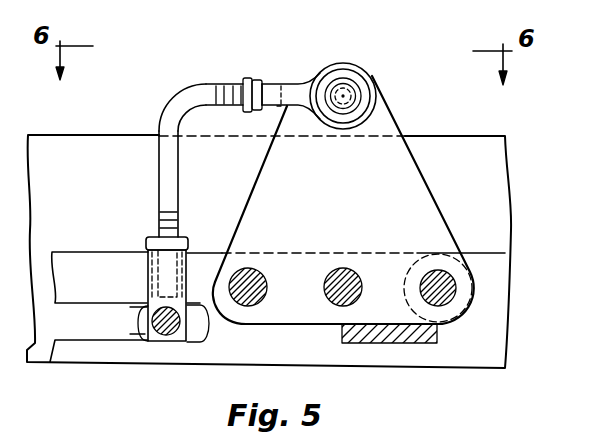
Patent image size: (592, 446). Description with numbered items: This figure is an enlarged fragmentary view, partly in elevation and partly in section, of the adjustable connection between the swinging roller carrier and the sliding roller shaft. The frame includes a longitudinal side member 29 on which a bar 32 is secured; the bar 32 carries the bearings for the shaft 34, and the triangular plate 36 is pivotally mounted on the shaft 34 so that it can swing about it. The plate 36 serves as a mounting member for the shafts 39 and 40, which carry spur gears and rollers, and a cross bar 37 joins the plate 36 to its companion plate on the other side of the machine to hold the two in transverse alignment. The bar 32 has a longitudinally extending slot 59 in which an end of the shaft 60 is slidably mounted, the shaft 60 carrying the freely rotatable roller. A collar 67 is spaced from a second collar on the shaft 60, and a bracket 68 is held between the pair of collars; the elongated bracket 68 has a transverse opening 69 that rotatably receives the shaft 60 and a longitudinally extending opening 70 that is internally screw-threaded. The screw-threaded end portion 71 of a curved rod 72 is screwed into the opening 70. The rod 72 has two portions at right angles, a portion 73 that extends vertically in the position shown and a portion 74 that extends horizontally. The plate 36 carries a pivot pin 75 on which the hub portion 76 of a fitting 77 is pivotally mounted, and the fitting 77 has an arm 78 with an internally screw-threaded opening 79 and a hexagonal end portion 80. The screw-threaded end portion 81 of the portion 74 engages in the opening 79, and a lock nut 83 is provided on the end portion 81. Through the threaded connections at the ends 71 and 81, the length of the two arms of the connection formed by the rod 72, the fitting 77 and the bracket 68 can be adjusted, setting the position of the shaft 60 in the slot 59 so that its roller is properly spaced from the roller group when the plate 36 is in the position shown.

The side member 29 is at (508, 152).
The bar 32 is at (508, 321).
The shaft 34 is at (455, 292).
The triangular plate 36 is at (398, 128).
The cross bar 37 is at (400, 346).
The shaft 39 is at (333, 304).
The shaft 40 is at (262, 305).
The slot 59 is at (88, 330).
The shaft 60 is at (177, 335).
The collar 67 is at (143, 327).
The bracket 68 is at (148, 288).
The transverse opening 69 is at (166, 340).
The longitudinally extending opening 70 is at (148, 265).
The screw-threaded end portion 71 is at (177, 222).
The curved rod 72 is at (158, 125).
The portion 73 is at (160, 164).
The portion 74 is at (207, 92).
The pivot pin 75 is at (343, 114).
The hub portion 76 is at (367, 82).
The fitting 77 is at (311, 78).
The arm 78 is at (300, 84).
The internally screw-threaded opening 79 is at (278, 108).
The hexagonal end portion 80 is at (260, 79).
The screw-threaded end portion 81 is at (229, 107).
The lock nut 83 is at (247, 78).